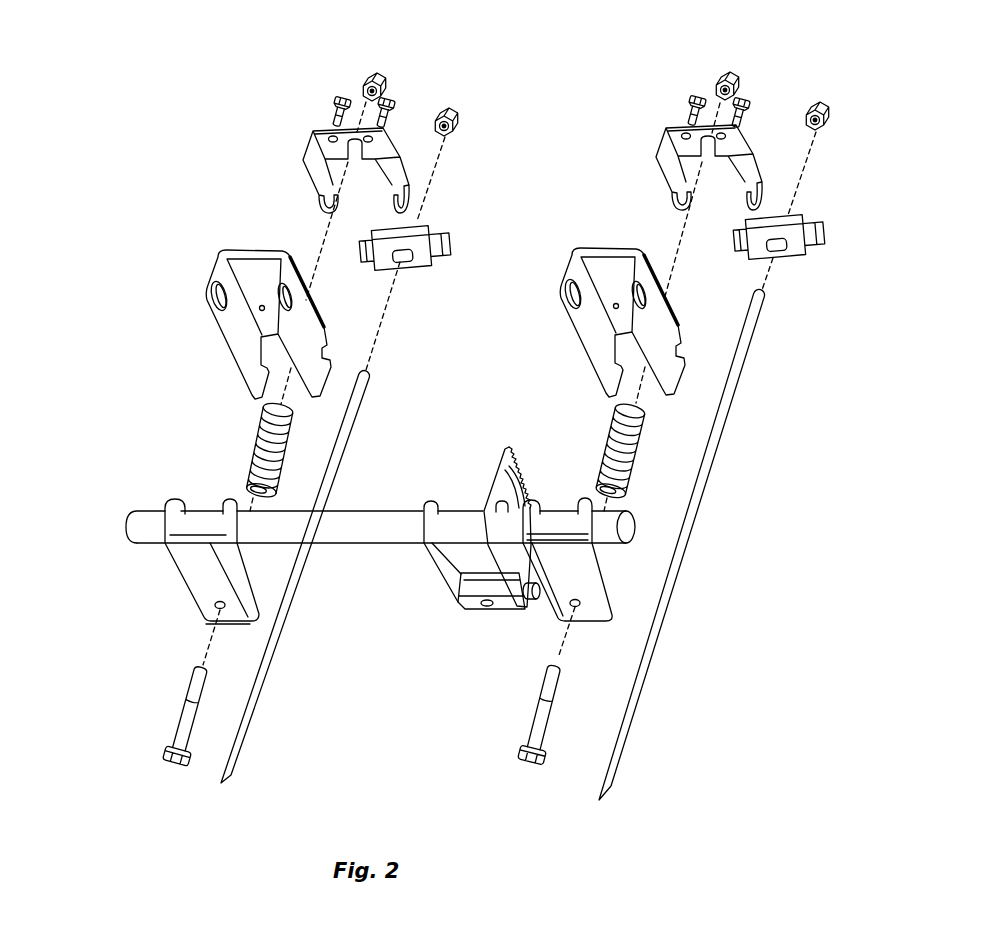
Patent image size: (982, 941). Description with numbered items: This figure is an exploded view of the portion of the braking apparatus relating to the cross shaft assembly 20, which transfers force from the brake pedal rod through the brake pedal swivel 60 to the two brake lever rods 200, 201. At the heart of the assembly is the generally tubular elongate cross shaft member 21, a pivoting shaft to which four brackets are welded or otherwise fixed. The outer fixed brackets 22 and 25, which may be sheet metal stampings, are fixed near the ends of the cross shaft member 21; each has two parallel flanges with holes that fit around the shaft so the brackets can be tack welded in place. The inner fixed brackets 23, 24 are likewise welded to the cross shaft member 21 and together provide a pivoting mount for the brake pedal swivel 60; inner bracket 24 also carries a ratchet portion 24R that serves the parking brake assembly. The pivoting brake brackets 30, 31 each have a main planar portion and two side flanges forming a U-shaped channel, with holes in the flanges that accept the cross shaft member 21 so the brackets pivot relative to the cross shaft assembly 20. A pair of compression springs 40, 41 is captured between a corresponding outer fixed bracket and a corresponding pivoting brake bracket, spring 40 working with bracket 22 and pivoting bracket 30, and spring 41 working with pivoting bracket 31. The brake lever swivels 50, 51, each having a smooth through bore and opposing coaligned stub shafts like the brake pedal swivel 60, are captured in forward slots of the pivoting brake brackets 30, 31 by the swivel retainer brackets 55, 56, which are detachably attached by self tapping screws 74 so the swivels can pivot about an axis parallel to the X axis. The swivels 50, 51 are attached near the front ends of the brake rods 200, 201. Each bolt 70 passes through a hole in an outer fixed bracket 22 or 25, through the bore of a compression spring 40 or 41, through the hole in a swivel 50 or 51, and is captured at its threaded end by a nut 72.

The cross shaft assembly 20 is at (127, 515).
The elongate tubular cross shaft member 21 is at (340, 548).
The outer fixed bracket 22 is at (203, 572).
The inner fixed bracket 23 is at (427, 502).
The inner fixed bracket 24 is at (502, 458).
The ratchet portion 24R is at (515, 452).
The outer fixed bracket 25 is at (587, 613).
The pivoting brake bracket 30 is at (260, 268).
The pivoting brake bracket 31 is at (678, 328).
The compression spring 40 is at (257, 447).
The compression spring 41 is at (652, 423).
The brake lever swivel 50 is at (417, 232).
The brake lever swivel 51 is at (822, 252).
The swivel retainer bracket 55 is at (320, 166).
The swivel retainer bracket 56 is at (767, 200).
The brake pedal swivel 60 is at (477, 607).
The bolt 70 is at (173, 727).
The nut 72 is at (366, 76).
The self tapping screw 74 is at (333, 108).
The brake lever rod 200 is at (226, 764).
The brake lever rod 201 is at (772, 562).